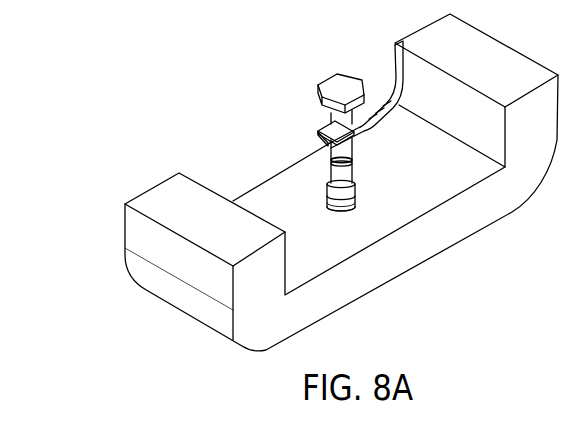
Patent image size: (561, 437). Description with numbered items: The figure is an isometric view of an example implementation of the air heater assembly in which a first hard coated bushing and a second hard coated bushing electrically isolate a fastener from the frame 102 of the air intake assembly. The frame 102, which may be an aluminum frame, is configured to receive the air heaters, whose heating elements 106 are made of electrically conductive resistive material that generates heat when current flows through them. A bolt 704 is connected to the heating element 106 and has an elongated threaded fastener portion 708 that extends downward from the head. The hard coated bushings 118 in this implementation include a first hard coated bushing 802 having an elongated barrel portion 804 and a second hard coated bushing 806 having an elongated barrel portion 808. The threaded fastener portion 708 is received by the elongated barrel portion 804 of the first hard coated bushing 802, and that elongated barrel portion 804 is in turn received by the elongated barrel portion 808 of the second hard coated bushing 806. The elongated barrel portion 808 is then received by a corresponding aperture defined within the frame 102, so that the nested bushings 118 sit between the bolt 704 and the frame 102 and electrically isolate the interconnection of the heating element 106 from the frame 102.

The frame 102 is at (147, 265).
The heating element 106 is at (393, 47).
The hard coated bushing 118 is at (350, 166).
The bolt 704 is at (318, 132).
The threaded fastener portion 708 is at (352, 145).
The first hard coated bushing 802 is at (351, 204).
The elongated barrel portion 804 is at (345, 183).
The second hard coated bushing 806 is at (332, 203).
The elongated barrel portion 808 is at (244, 194).